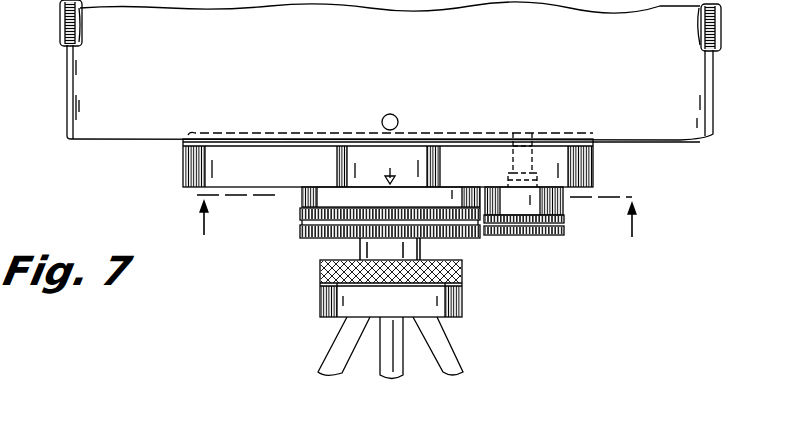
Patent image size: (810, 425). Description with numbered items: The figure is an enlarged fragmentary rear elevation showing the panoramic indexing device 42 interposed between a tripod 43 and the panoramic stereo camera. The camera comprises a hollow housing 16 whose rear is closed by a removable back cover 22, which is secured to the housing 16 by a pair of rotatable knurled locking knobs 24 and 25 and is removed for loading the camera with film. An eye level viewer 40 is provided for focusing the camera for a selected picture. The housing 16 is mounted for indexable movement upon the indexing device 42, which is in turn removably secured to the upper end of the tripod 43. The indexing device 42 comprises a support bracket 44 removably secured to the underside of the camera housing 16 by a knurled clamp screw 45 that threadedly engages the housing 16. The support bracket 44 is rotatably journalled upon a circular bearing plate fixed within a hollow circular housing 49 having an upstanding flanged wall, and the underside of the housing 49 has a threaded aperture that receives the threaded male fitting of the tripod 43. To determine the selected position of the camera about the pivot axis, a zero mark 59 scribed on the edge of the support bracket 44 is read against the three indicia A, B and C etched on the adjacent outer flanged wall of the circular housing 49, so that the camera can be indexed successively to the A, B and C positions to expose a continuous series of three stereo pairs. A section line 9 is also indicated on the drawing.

The section line 9- 9 is at (417, 228).
The hollow housing 16 is at (630, 143).
The back cover 22 is at (690, 103).
The knurled locking knob 24 is at (716, 32).
The knurled locking knob 25 is at (65, 24).
The eye level viewer 40 is at (395, 114).
The panoramic indexing device 42 is at (488, 250).
The tripod 43 is at (450, 302).
The support bracket 44 is at (203, 167).
The knurled clamp screw 45 is at (548, 203).
The hollow circular housing 49 is at (300, 196).
The zero mark 59 is at (390, 168).